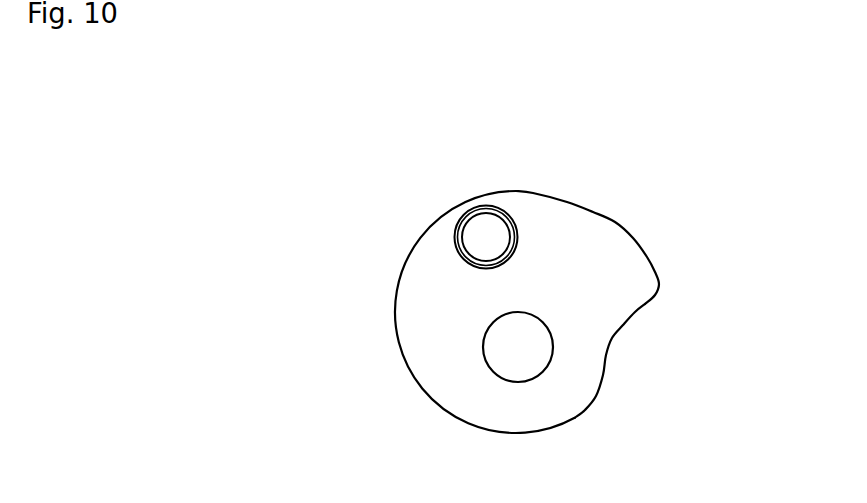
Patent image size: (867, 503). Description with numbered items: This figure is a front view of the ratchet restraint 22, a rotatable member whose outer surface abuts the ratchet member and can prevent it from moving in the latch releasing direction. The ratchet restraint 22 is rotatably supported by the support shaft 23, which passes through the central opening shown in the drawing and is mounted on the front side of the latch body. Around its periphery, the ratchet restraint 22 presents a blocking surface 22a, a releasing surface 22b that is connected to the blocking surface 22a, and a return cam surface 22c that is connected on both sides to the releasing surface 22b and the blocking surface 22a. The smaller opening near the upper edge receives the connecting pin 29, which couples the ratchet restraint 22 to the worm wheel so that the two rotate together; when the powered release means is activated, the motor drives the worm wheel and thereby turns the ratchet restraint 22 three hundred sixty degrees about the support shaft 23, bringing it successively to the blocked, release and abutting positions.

The ratchet restraint 22 is at (524, 293).
The blocking surface 22a is at (617, 218).
The releasing surface 22b is at (633, 312).
The return cam surface 22c is at (407, 253).
The support shaft 23 is at (517, 348).
The connecting pin 29 is at (475, 230).